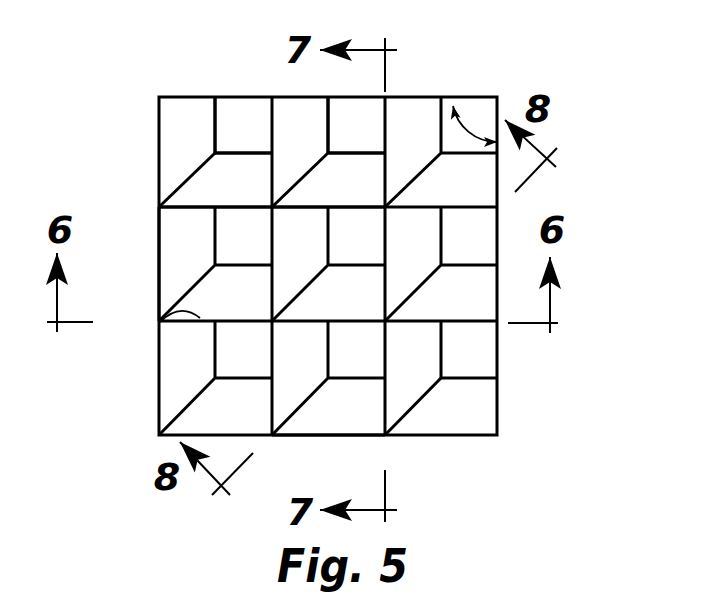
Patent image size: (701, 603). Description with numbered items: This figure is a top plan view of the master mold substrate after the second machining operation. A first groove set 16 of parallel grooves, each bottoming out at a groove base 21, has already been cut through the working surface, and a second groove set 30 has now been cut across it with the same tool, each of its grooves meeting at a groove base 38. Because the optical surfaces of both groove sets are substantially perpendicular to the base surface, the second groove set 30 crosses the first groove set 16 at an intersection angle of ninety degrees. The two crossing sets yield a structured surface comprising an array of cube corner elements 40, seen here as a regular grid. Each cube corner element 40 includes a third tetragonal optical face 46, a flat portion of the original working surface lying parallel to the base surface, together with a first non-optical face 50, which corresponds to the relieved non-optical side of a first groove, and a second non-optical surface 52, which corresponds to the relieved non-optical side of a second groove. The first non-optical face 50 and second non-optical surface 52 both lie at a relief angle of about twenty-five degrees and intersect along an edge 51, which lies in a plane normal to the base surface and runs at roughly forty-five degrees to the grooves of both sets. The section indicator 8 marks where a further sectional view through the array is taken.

The retroreflective cube-corner article 8 is at (533, 76).
The cube corner elements 40 is at (300, 90).
The first non-optical face 50 is at (171, 148).
The third tetragonal optical face 46 is at (230, 141).
The second non-optical surface 52 is at (222, 196).
The edge 51 is at (185, 182).
The second groove set 30 is at (157, 210).
The groove base 38 is at (160, 322).
The first groove set 16 is at (380, 443).
The groove base 21 is at (385, 408).